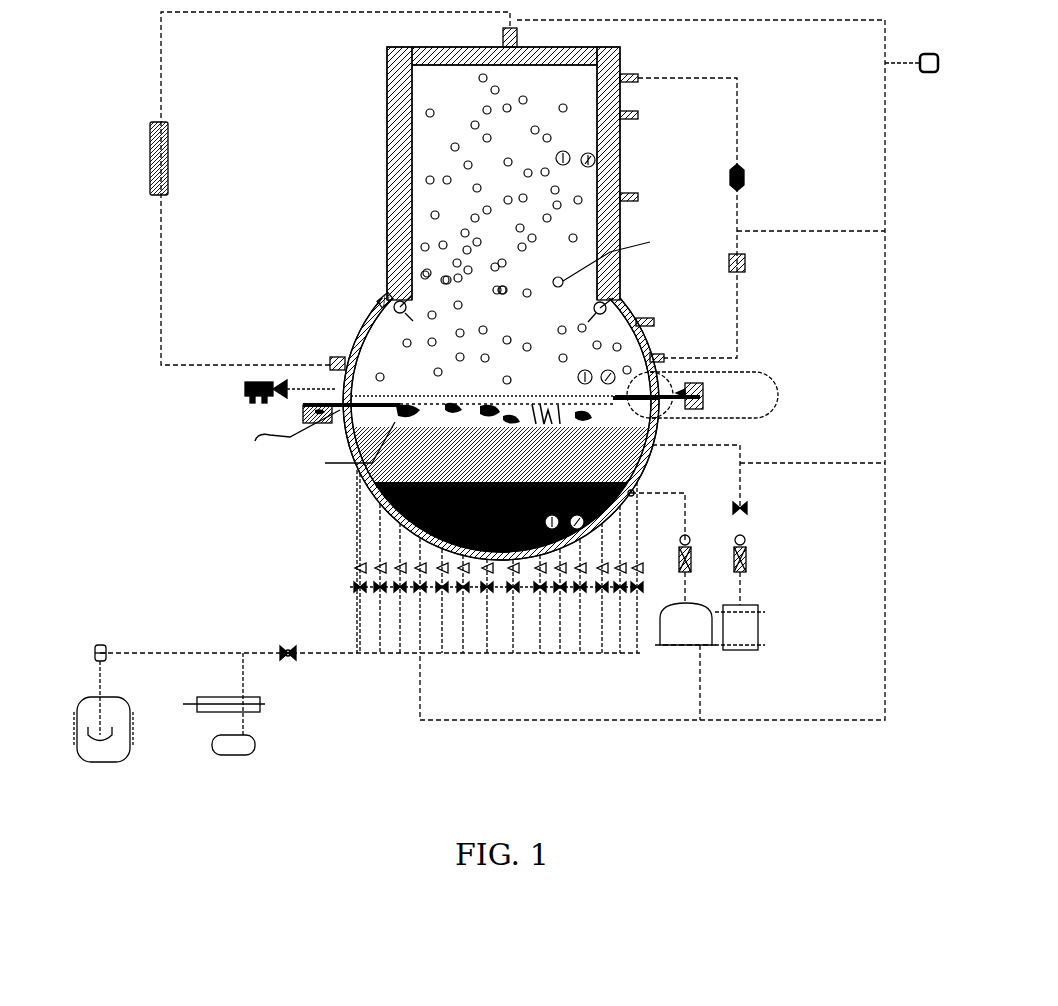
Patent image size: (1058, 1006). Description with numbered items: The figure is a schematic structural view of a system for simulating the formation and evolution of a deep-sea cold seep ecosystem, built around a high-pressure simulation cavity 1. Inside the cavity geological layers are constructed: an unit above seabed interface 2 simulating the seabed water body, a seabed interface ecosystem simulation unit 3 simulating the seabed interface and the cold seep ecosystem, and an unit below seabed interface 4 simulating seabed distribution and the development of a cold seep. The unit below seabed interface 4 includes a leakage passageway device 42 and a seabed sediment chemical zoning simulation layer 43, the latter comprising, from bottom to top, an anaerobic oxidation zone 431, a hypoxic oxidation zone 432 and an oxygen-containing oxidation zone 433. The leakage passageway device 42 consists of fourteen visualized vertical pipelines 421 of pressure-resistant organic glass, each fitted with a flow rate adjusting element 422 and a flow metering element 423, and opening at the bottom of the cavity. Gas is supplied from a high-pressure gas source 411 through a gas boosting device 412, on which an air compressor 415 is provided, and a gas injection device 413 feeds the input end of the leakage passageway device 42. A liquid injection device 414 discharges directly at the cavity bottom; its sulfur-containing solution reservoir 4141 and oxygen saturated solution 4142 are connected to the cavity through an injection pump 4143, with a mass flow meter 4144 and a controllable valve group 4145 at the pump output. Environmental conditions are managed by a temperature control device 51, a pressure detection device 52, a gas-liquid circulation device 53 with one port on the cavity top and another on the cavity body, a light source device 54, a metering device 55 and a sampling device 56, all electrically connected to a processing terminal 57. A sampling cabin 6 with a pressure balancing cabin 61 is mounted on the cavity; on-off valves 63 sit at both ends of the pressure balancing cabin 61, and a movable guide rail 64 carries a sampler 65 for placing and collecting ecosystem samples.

The high-pressure simulation cavity 1 is at (404, 156).
The unit above seabed interface 2 is at (395, 188).
The seabed interface ecosystem simulation unit 3 is at (653, 420).
The unit below seabed interface 4 is at (642, 462).
The sampling cabin 6 is at (742, 402).
The leakage passageway device 42 is at (283, 617).
The seabed sediment chemical zoning simulation layer 43 is at (307, 533).
The temperature control device 51 is at (745, 265).
The pressure detection device 52 is at (745, 185).
The gas-liquid circulation device 53 is at (150, 162).
The light source device 54 is at (383, 292).
The metering device 55 is at (248, 380).
The sampling device 56 is at (637, 116).
The processing terminal 57 is at (890, 63).
The pressure balancing cabin 61 is at (717, 383).
The on-off valve 63 is at (778, 393).
The movable guide rail 64 is at (650, 397).
The sampler 65 is at (700, 397).
The high-pressure gas source 411 is at (102, 762).
The gas boosting device 412 is at (260, 707).
The gas injection device 413 is at (285, 648).
The liquid injection device 414 is at (838, 487).
The air compressor 415 is at (255, 750).
The pipelines 421 is at (358, 605).
The flow rate adjusting element 422 is at (358, 588).
The flow metering element 423 is at (358, 571).
The anaerobic oxidation zone 431 is at (357, 533).
The hypoxic oxidation zone 432 is at (427, 422).
The oxygen-containing oxidation zone 433 is at (437, 103).
The sulfur-containing solution reservoir 4141 is at (688, 648).
The oxygen saturated solution 4142 is at (750, 650).
The injection pump 4143 is at (745, 570).
The mass flow meter 4144 is at (743, 537).
The controllable valve group 4145 is at (742, 506).